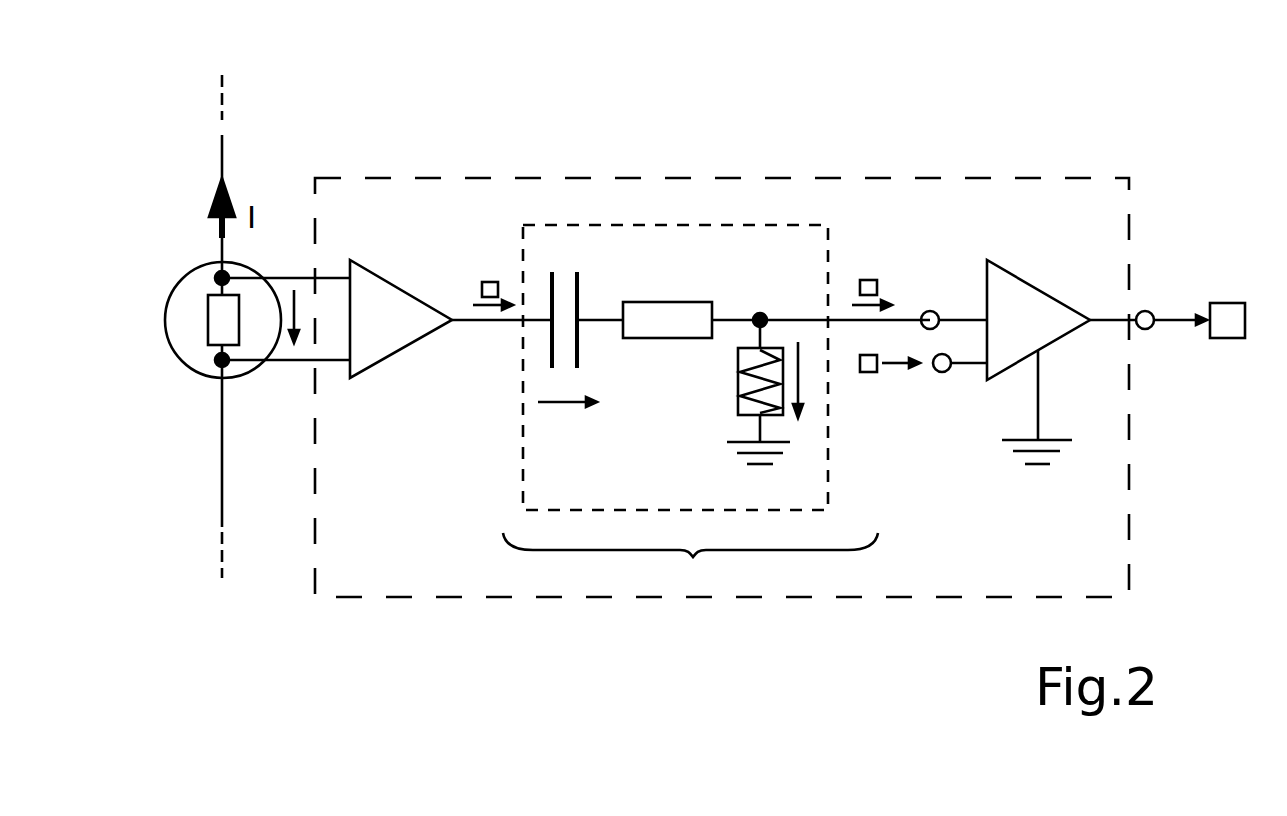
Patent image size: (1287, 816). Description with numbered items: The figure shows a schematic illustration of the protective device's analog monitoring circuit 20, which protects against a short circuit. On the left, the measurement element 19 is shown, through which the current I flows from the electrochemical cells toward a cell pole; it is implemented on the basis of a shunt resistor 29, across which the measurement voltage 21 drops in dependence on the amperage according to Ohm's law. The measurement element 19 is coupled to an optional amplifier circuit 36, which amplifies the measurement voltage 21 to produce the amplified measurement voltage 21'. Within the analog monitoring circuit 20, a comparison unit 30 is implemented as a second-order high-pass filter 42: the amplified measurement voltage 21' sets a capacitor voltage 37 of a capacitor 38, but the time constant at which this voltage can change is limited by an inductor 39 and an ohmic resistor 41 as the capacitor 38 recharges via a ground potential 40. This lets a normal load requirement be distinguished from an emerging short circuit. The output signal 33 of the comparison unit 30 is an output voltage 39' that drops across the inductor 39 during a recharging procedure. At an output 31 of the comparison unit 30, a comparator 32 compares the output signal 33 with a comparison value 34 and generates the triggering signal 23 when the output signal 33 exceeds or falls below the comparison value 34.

The measurement element 19 is at (190, 270).
The shunt resistor 29 is at (208, 317).
The measurement voltage 21 is at (325, 278).
The amplifier circuit 36 is at (390, 360).
The analog monitoring circuit 20 is at (670, 178).
The amplified measurement voltage 21' is at (483, 262).
The second-order high-pass filter 42 is at (778, 223).
The capacitor 38 is at (577, 288).
The ohmic resistor 41 is at (653, 340).
The inductor 39 is at (725, 381).
The ground potential 40 is at (790, 442).
The output voltage 39' is at (839, 369).
The capacitor voltage 37 is at (563, 402).
The comparison unit 30 is at (690, 561).
The output signal 33 is at (868, 280).
The output 31 is at (930, 311).
The comparison value 34 is at (868, 373).
The comparator 32 is at (1030, 280).
The triggering signal 23 is at (1225, 303).